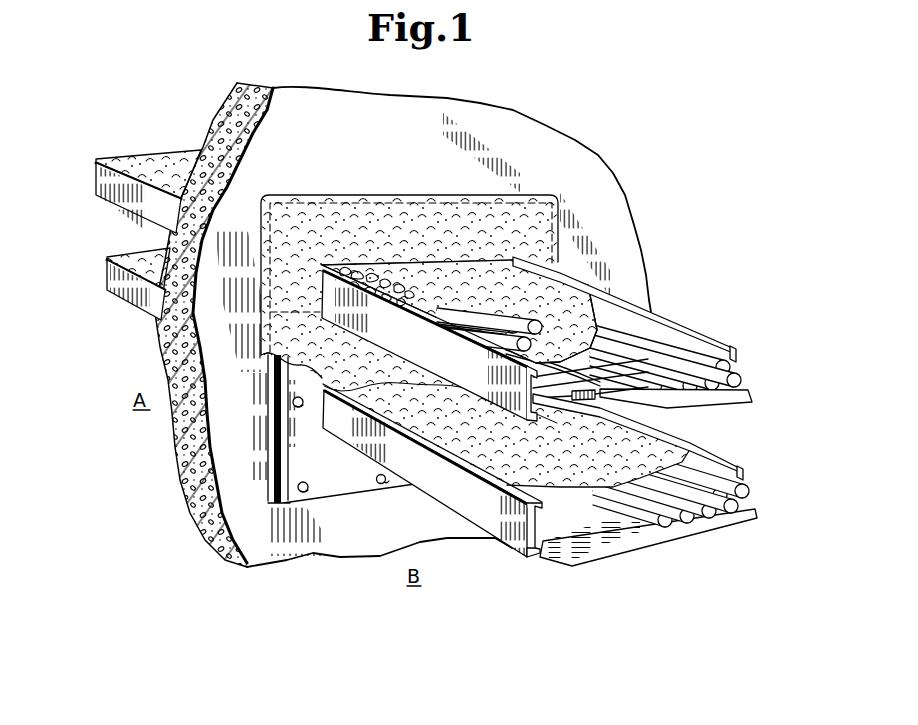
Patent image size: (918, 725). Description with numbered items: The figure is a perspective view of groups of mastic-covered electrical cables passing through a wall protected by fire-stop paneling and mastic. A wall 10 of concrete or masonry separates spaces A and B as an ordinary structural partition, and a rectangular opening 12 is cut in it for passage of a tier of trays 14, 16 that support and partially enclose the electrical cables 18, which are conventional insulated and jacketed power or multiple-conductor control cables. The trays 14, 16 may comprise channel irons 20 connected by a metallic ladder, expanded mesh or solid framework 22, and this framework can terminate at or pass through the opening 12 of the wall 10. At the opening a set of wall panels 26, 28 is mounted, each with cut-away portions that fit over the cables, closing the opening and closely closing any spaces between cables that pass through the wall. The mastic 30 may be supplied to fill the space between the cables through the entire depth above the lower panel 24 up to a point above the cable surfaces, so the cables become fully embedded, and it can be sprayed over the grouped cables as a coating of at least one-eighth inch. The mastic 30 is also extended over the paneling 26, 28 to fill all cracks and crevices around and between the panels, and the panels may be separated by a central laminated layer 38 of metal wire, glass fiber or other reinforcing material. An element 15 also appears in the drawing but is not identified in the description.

The wall 10 is at (517, 134).
The rectangular opening 12 is at (272, 498).
The tray 14 is at (735, 352).
The fill material 15 is at (372, 292).
The tray 16 is at (743, 468).
The electrical cables 18 is at (748, 498).
The channel irons 20 is at (540, 558).
The framework 22 is at (651, 408).
The lower panel 24 is at (618, 534).
The wall panel 26 is at (290, 458).
The wall panel 28 is at (288, 376).
The mastic 30 is at (268, 223).
The central laminated layer 38 is at (307, 489).